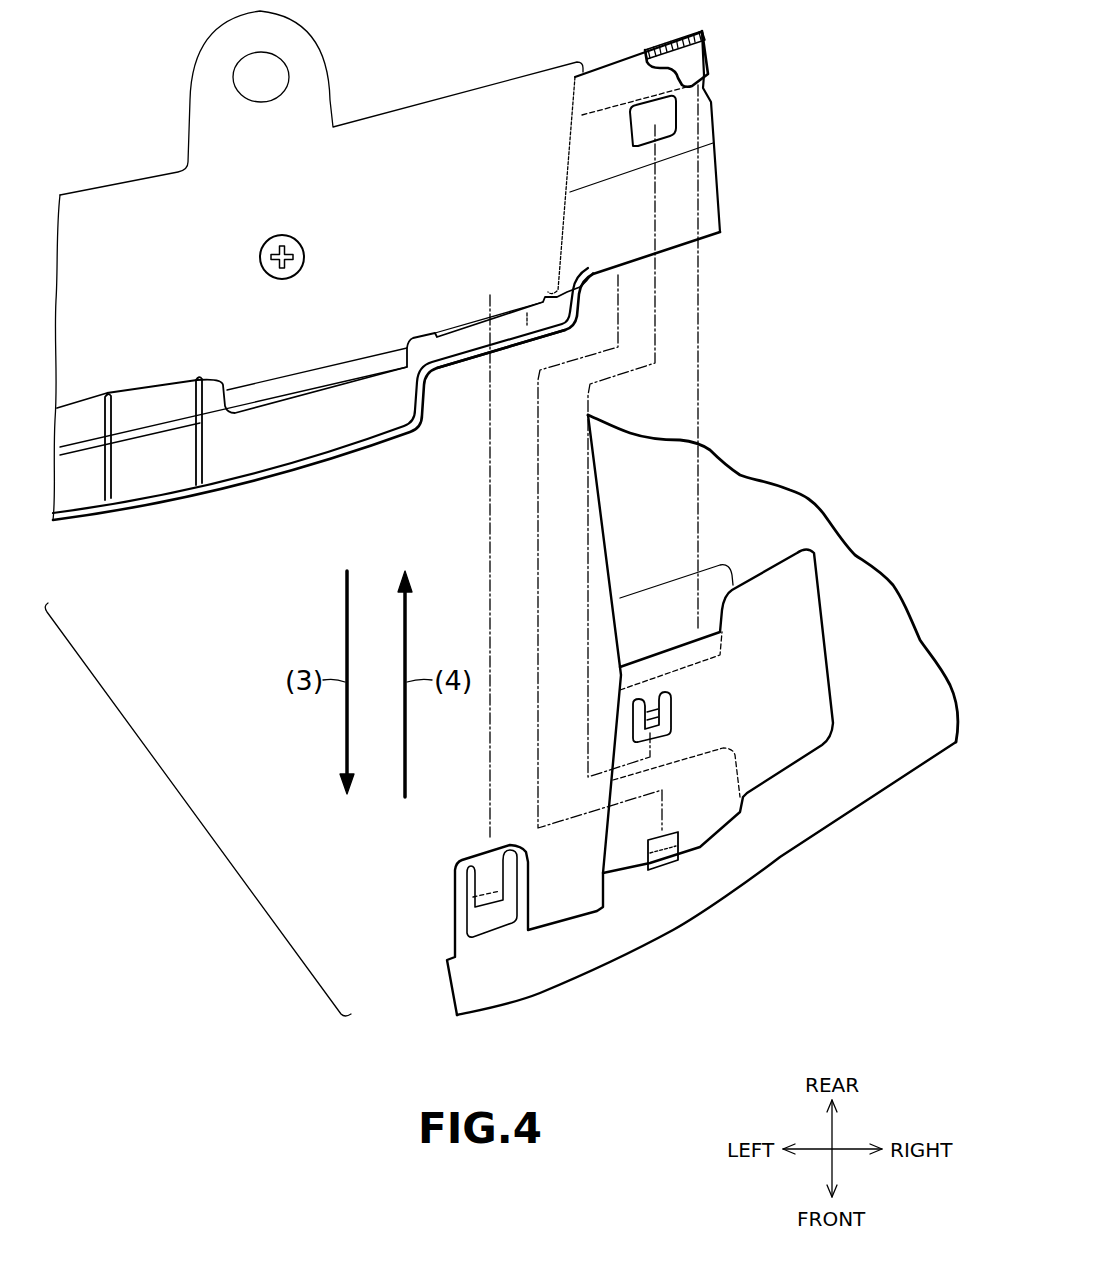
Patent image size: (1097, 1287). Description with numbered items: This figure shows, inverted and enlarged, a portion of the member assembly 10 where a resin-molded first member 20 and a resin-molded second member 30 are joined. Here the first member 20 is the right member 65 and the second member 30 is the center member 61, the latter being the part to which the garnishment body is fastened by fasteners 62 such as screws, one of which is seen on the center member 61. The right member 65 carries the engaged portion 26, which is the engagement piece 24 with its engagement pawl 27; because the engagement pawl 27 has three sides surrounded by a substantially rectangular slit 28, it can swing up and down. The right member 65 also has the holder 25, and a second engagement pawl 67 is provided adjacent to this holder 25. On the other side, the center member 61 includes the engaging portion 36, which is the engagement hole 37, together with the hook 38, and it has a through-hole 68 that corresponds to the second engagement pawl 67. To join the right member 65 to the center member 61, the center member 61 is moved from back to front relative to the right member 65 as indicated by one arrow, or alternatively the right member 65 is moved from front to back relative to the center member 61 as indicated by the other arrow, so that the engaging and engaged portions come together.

The member assembly 10 is at (196, 832).
The first member 20 is at (795, 867).
The engagement piece 24 is at (672, 660).
The holder 25 is at (667, 857).
The engaged portion 26 is at (721, 701).
The engagement pawl 27 is at (670, 702).
The slit 28 is at (667, 720).
The second member 30 is at (184, 512).
The engaging portion 36 is at (616, 76).
The engagement hole 37 is at (628, 113).
The hook 38 is at (692, 63).
The center member 61 is at (386, 303).
The fastener 62 is at (270, 248).
The right member 65 is at (681, 715).
The second engagement pawl 67 is at (470, 898).
The through-hole 68 is at (455, 336).